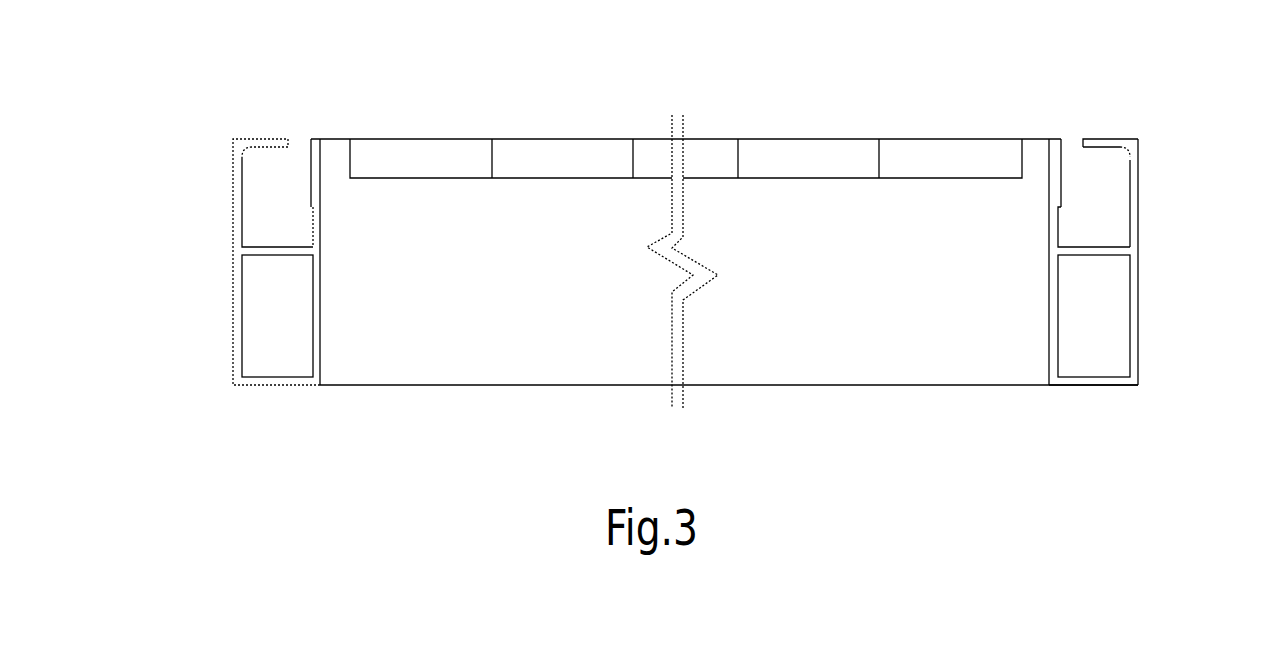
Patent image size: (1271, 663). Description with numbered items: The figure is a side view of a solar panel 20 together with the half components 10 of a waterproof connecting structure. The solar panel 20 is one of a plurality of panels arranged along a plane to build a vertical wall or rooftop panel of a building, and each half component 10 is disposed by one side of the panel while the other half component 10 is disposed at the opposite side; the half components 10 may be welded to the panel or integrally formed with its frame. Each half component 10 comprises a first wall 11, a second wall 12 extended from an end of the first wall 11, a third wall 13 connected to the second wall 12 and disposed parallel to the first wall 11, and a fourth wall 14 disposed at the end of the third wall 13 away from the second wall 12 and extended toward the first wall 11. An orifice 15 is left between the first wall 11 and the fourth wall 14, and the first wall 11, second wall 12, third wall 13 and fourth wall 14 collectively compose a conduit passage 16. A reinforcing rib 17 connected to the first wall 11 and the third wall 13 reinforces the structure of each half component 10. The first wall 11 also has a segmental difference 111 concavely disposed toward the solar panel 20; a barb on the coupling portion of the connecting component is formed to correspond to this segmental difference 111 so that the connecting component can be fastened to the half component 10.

The half component 10 is at (233, 237).
The first wall 11 is at (1056, 147).
The segmental difference 111 is at (1057, 203).
The second wall 12 is at (1092, 380).
The third wall 13 is at (1133, 193).
The fourth wall 14 is at (1102, 139).
The orifice 15 is at (1072, 145).
The conduit passage 16 is at (1098, 228).
The reinforcing rib 17 is at (1097, 250).
The solar panel 20 is at (465, 139).